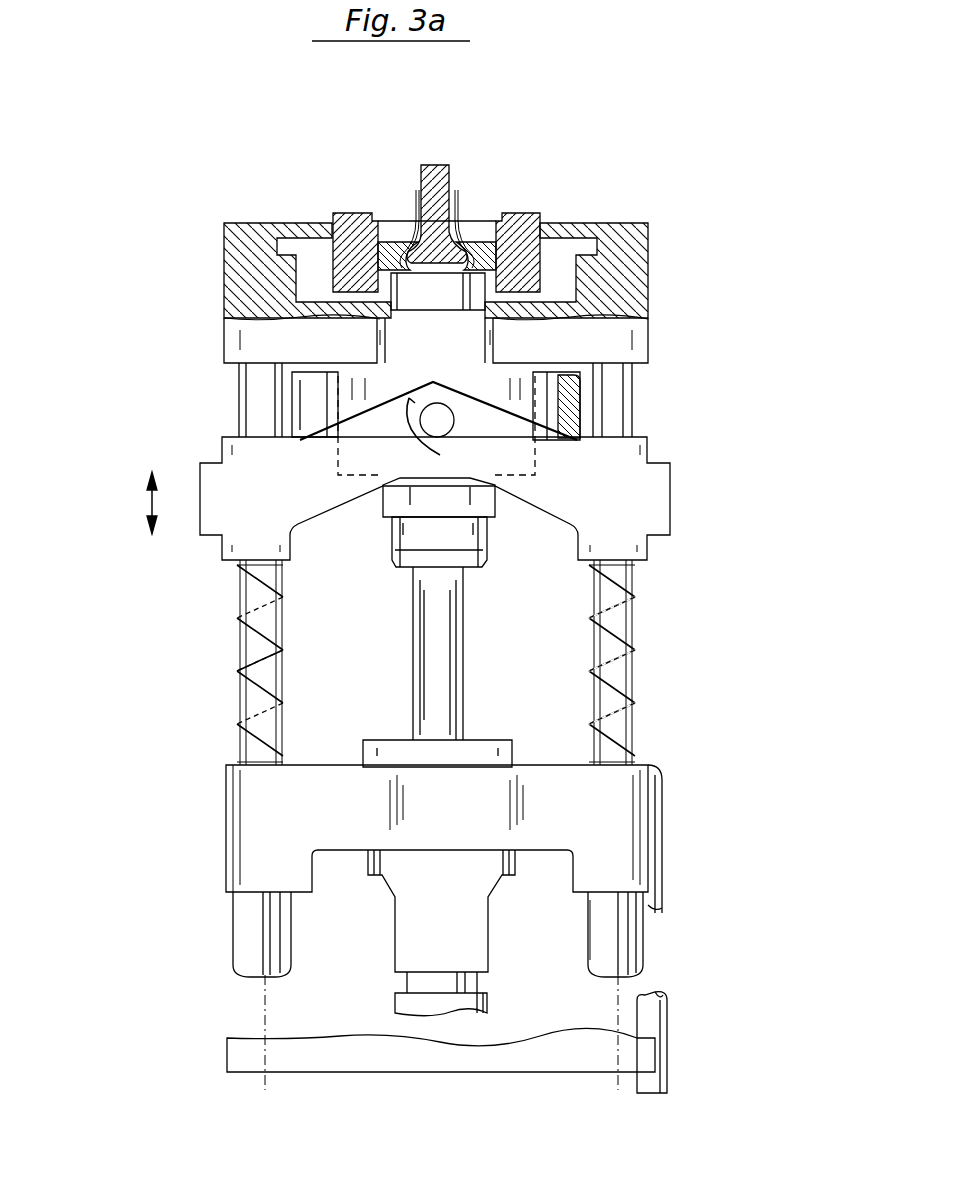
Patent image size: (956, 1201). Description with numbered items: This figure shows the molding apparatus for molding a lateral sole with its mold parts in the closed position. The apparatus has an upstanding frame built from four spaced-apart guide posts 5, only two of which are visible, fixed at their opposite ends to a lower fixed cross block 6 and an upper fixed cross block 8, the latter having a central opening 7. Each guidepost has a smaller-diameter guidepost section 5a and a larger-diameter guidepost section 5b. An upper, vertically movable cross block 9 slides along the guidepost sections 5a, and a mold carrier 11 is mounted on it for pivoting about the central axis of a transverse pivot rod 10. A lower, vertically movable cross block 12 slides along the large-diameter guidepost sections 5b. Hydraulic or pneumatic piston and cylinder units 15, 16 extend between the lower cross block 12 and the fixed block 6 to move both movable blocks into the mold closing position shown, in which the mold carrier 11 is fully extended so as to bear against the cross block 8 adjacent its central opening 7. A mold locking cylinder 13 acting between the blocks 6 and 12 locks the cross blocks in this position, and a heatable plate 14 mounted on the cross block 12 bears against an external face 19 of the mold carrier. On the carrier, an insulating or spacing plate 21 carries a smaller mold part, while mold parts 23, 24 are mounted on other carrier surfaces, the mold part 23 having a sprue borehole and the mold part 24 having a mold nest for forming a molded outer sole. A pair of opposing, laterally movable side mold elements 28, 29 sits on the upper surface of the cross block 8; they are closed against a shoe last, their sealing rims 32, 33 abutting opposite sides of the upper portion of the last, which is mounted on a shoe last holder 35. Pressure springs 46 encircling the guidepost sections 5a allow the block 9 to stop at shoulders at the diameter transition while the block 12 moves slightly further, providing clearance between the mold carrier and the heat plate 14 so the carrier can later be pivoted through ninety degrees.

The guide post 5 is at (637, 663).
The guidepost section 5a is at (636, 632).
The guidepost section 5b is at (635, 935).
The lower fixed cross block 6 is at (645, 1052).
The central opening 7 is at (382, 340).
The upper fixed cross block 8 is at (633, 302).
The upper vertically movable cross block 9 is at (620, 507).
The transverse pivot rod 10 is at (585, 410).
The mold carrier 11 is at (375, 390).
The lower vertically movable cross block 12 is at (280, 848).
The mold locking cylinder 13 is at (430, 927).
The heatable plate 14 is at (482, 568).
The piston and cylinder unit 15 is at (665, 1015).
The piston and cylinder unit 16 is at (660, 884).
The external face 19 is at (407, 527).
The insulating or spacing plate 21 is at (468, 285).
The mold part 23 is at (300, 412).
The mold part 24 is at (545, 385).
The side mold element 28 is at (502, 216).
The side mold element 29 is at (390, 250).
The sealing rim 32 is at (470, 228).
The sealing rim 33 is at (410, 222).
The shoe last holder 35 is at (477, 215).
The pressure spring 46 is at (240, 603).